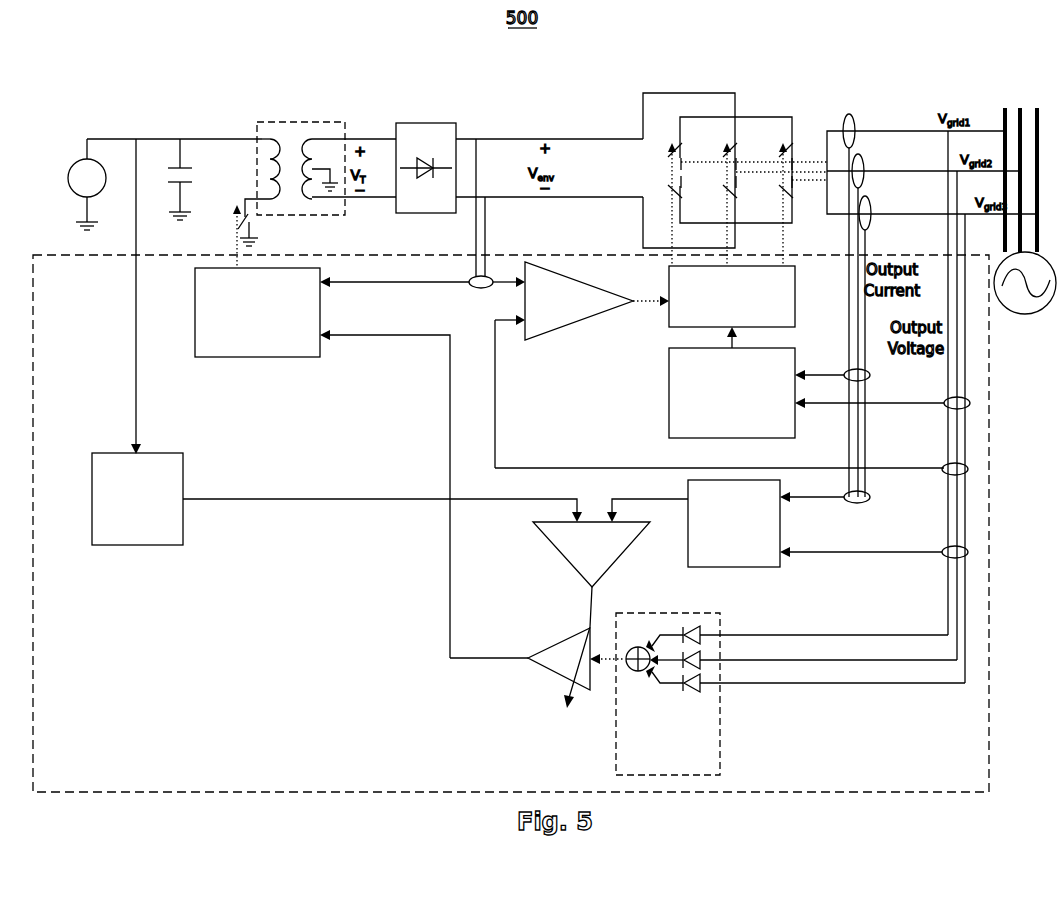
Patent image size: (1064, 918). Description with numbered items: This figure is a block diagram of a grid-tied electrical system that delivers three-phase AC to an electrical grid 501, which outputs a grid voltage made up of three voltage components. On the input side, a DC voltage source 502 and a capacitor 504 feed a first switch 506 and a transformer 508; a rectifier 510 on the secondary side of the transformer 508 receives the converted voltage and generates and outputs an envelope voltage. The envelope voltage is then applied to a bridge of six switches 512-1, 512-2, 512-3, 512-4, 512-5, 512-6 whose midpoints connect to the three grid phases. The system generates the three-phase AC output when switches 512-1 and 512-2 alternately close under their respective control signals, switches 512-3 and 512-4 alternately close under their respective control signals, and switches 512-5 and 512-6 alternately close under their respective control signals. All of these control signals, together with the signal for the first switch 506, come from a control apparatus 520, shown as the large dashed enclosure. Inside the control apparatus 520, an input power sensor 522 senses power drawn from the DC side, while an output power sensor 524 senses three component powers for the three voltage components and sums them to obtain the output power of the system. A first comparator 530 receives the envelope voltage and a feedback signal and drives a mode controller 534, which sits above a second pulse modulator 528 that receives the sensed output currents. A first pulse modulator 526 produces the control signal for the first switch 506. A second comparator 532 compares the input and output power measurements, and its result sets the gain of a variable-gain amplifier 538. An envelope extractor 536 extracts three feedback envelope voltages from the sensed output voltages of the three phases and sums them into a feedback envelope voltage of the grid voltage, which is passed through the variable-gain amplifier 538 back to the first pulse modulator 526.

The electrical grid 501 is at (1027, 237).
The DC voltage source 502 is at (115, 158).
The capacitor 504 is at (207, 153).
The first switch 506 is at (277, 225).
The transformer 508 is at (301, 149).
The rectifier 510 is at (433, 149).
The switch 512-1 is at (647, 109).
The switch 512-2 is at (630, 201).
The switch 512-3 is at (719, 107).
The switch 512-4 is at (658, 213).
The switch 512-5 is at (805, 124).
The switch 512-6 is at (802, 215).
The control apparatus 520 is at (541, 523).
The input power sensor 522 is at (162, 491).
The output power sensor 524 is at (815, 543).
The first pulse modulator 526 is at (257, 334).
The second pulse modulator 528 is at (788, 382).
The first comparator 530 is at (579, 314).
The second comparator 532 is at (591, 561).
The mode controller 534 is at (713, 311).
The envelope extractor 536 is at (790, 694).
The variable-gain amplifier 538 is at (525, 650).